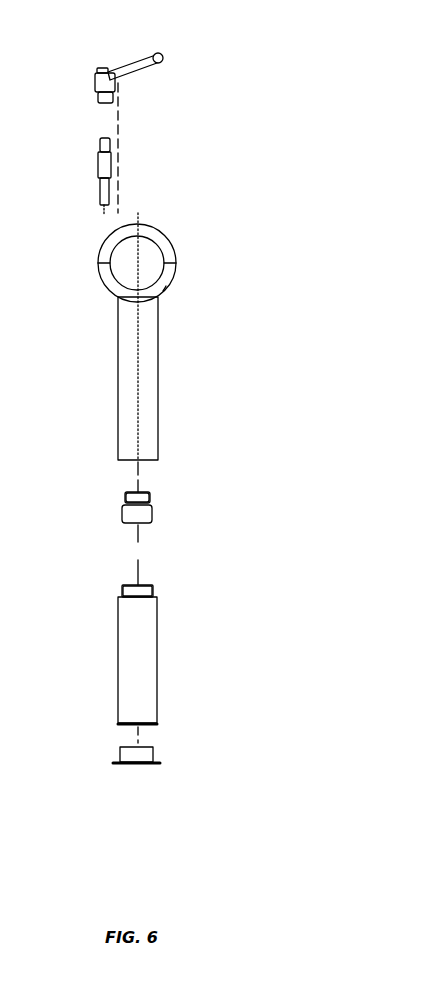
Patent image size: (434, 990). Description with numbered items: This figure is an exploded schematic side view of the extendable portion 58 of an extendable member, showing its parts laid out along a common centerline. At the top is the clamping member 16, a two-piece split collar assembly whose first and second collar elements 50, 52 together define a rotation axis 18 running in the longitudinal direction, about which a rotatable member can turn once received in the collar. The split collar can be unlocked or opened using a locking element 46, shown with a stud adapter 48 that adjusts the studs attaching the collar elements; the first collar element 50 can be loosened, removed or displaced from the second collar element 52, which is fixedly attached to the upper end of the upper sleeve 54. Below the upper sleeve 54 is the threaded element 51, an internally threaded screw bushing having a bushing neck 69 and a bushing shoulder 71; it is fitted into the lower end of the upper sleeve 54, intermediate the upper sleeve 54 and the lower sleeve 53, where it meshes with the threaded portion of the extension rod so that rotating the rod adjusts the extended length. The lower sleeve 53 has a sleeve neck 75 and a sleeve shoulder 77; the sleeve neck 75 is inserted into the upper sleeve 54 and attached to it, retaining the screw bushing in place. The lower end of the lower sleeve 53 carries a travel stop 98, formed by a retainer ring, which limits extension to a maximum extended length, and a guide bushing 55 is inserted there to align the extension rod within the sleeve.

The clamping member 16 is at (62, 216).
The rotation axis 18 is at (134, 266).
The locking element 46 is at (163, 53).
The stud adapter 48 is at (100, 153).
The first collar element 50 is at (153, 232).
The threaded element 51 is at (152, 511).
The second collar element 52 is at (172, 284).
The lower sleeve 53 is at (157, 632).
The upper sleeve 54 is at (158, 412).
The guide bushing 55 is at (155, 753).
The extendable portion 58 is at (266, 240).
The bushing neck 69 is at (126, 495).
The bushing shoulder 71 is at (150, 499).
The sleeve neck 75 is at (121, 592).
The sleeve shoulder 77 is at (153, 595).
The travel stop 98 is at (158, 724).